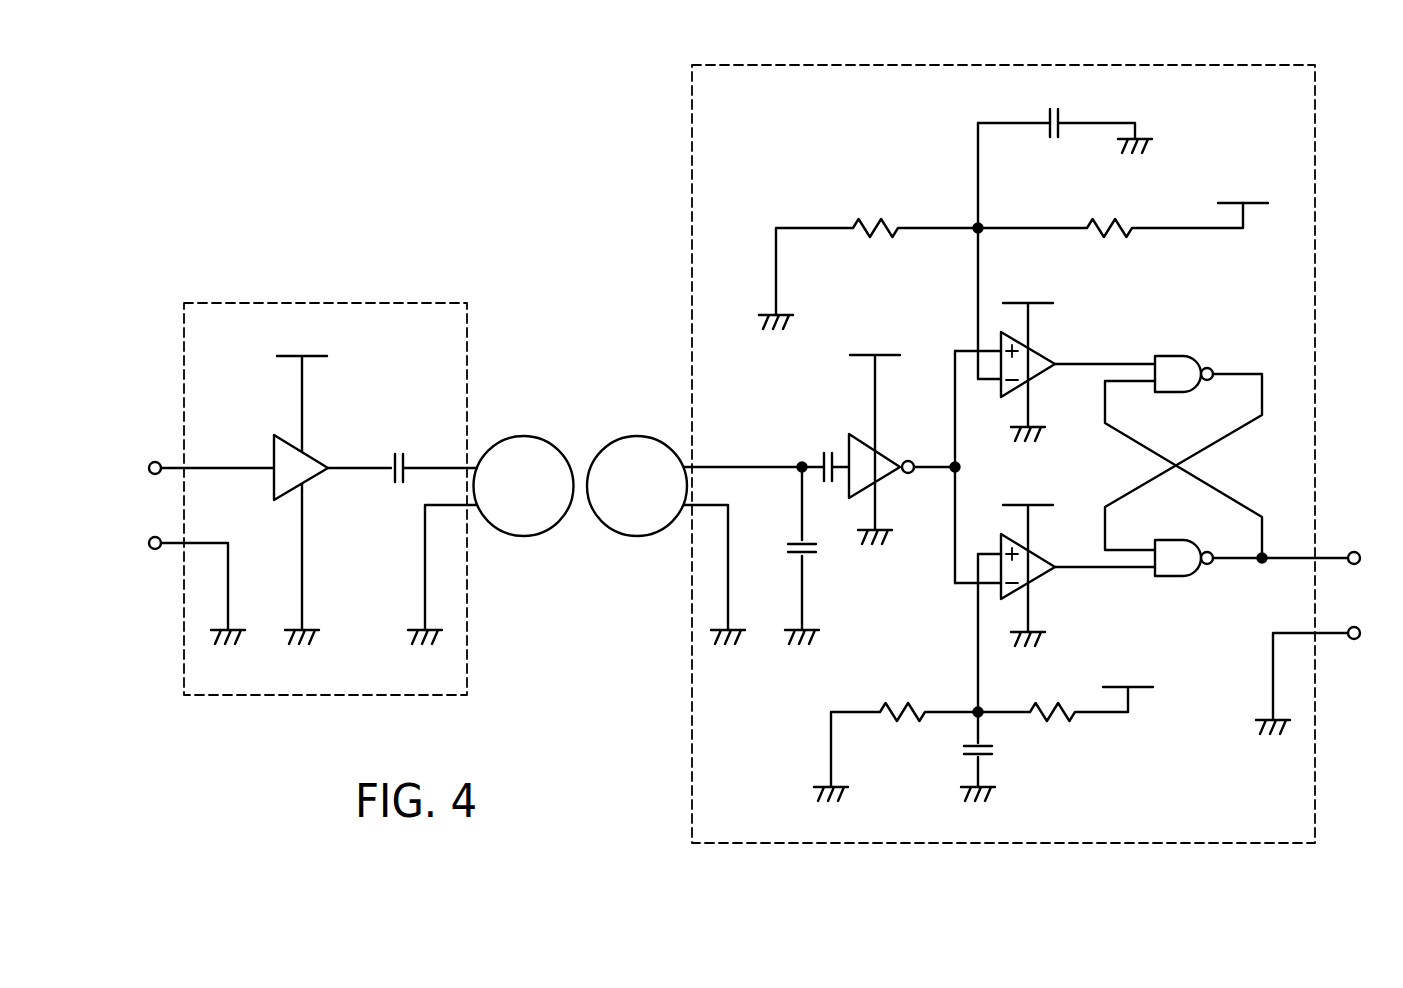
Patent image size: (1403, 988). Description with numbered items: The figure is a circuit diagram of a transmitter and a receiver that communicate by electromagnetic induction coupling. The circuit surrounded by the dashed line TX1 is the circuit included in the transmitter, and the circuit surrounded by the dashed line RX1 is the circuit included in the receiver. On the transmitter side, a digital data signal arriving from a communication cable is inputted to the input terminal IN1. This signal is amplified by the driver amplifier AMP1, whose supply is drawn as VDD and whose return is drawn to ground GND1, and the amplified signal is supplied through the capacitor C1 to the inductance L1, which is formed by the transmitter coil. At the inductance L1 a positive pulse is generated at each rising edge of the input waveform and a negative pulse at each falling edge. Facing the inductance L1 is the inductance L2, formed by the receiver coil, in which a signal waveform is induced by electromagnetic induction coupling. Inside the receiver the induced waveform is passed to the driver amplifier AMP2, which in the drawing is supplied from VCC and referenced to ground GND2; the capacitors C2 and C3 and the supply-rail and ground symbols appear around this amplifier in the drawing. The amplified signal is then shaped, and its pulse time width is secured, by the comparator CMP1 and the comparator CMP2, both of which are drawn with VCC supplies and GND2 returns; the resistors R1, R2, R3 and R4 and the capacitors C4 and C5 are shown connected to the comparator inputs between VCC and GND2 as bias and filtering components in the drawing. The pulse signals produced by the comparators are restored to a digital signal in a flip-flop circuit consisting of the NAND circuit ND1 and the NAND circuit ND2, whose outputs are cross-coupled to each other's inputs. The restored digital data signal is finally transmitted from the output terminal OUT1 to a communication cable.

The dashed-line TX1 is at (330, 303).
The dashed-line RX1 is at (1012, 64).
The input terminal IN1 is at (205, 455).
The output terminal OUT1 is at (1322, 545).
The power supply voltage of transmitter VDD is at (302, 481).
The power supply voltage of receiver VCC is at (1059, 432).
The ground of transmitter GND1 is at (336, 589).
The ground of receiver GND2 is at (1000, 483).
The driver amplifier AMP1 is at (315, 455).
The driver amplifier AMP2 is at (890, 455).
The capacitor C1 is at (430, 455).
The capacitor C2 is at (785, 547).
The capacitor C3 is at (825, 453).
The capacitor C4 is at (1056, 110).
The capacitor C5 is at (995, 749).
The inductance L1 is at (524, 435).
The inductance L2 is at (639, 435).
The resistor R1 is at (877, 251).
The resistor R2 is at (1110, 212).
The resistor R3 is at (904, 730).
The resistor R4 is at (1053, 697).
The comparator CMP1 is at (1038, 350).
The comparator CMP2 is at (1038, 581).
The NAND circuit ND1 is at (1183, 356).
The NAND circuit ND2 is at (1183, 577).